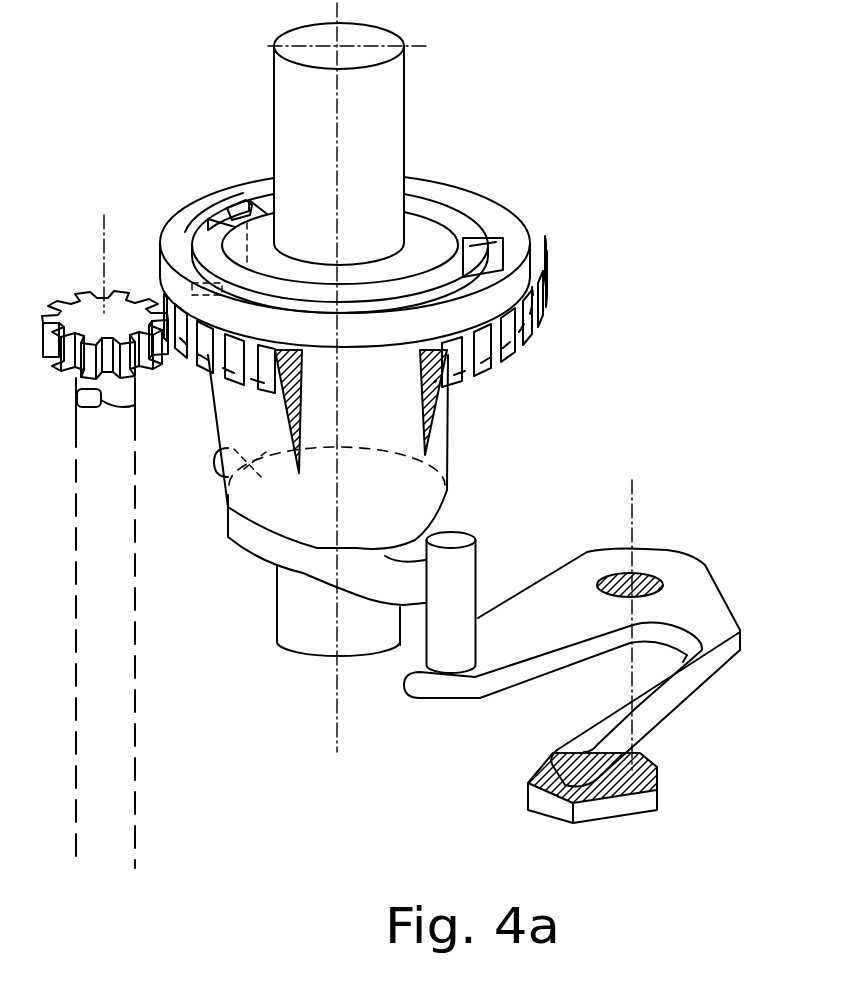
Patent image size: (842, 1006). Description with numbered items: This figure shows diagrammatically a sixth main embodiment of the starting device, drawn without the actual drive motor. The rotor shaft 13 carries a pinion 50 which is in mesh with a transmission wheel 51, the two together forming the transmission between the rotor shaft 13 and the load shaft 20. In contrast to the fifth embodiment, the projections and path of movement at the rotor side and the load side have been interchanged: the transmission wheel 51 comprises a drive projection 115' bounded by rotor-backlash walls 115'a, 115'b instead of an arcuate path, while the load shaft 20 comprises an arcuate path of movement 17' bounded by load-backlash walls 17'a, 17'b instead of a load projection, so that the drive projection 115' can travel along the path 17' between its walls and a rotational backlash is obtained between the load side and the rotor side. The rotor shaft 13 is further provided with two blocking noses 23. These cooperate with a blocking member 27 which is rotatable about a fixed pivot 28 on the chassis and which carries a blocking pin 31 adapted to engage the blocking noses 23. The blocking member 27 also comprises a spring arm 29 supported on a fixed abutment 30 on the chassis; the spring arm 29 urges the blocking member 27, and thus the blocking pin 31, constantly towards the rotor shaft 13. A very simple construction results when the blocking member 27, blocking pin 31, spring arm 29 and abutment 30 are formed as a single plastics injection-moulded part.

The load shaft 20 is at (298, 100).
The arcuate path of movement 17' is at (345, 231).
The load-backlash wall 17'a is at (247, 173).
The load-backlash wall 17'b is at (499, 218).
The drive projection 115' is at (208, 184).
The rotor-backlash wall 115'a is at (215, 175).
The rotor-backlash wall 115'b is at (167, 229).
The pinion 50 is at (63, 308).
The transmission wheel 51 is at (193, 363).
The rotor shaft 13 is at (93, 558).
The blocking noses 23 is at (228, 472).
The blocking member 27 is at (553, 590).
The fixed pivot 28 is at (657, 577).
The spring arm 29 is at (653, 693).
The fixed abutment 30 is at (543, 777).
The blocking pin 31 is at (467, 530).